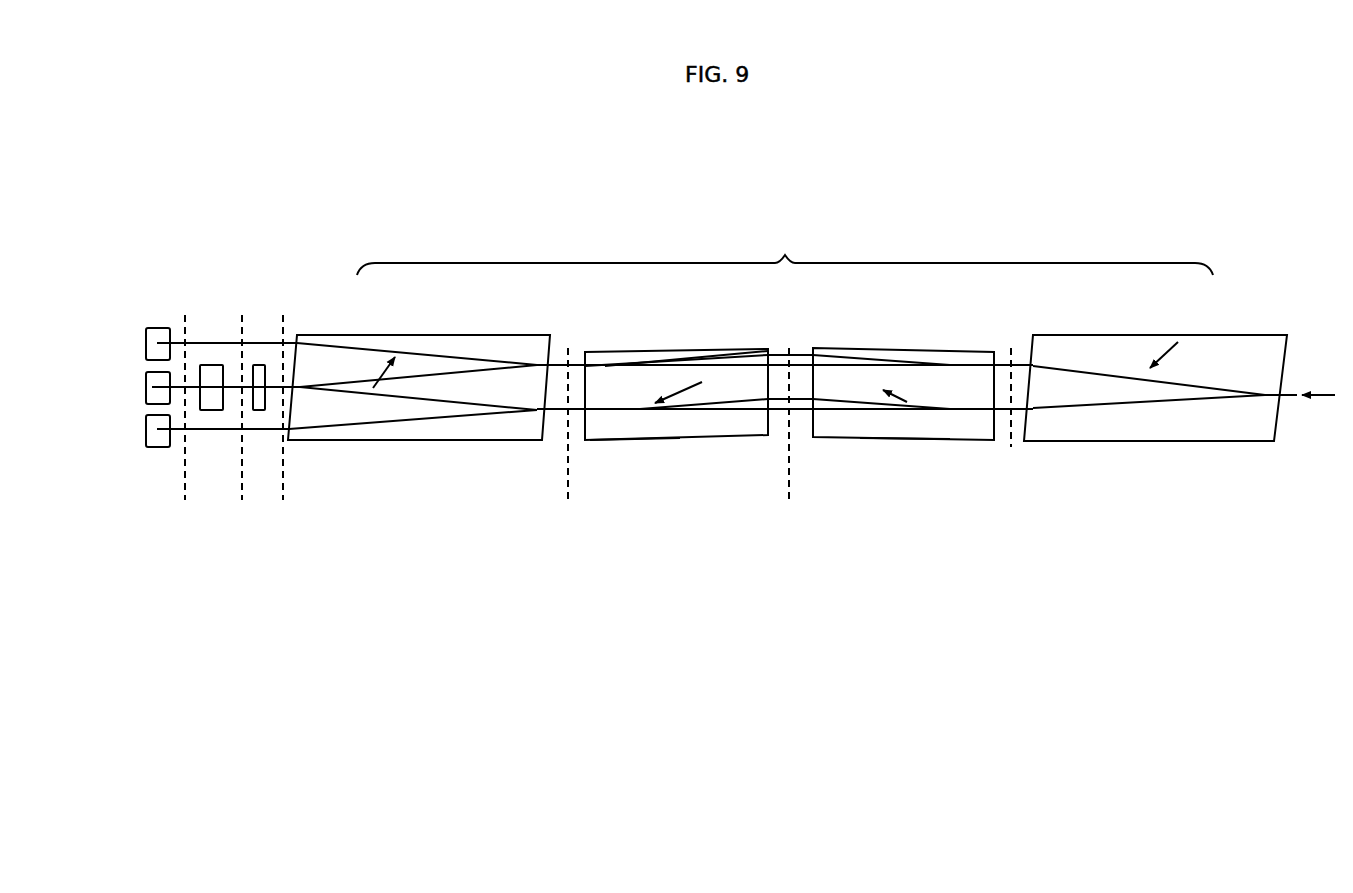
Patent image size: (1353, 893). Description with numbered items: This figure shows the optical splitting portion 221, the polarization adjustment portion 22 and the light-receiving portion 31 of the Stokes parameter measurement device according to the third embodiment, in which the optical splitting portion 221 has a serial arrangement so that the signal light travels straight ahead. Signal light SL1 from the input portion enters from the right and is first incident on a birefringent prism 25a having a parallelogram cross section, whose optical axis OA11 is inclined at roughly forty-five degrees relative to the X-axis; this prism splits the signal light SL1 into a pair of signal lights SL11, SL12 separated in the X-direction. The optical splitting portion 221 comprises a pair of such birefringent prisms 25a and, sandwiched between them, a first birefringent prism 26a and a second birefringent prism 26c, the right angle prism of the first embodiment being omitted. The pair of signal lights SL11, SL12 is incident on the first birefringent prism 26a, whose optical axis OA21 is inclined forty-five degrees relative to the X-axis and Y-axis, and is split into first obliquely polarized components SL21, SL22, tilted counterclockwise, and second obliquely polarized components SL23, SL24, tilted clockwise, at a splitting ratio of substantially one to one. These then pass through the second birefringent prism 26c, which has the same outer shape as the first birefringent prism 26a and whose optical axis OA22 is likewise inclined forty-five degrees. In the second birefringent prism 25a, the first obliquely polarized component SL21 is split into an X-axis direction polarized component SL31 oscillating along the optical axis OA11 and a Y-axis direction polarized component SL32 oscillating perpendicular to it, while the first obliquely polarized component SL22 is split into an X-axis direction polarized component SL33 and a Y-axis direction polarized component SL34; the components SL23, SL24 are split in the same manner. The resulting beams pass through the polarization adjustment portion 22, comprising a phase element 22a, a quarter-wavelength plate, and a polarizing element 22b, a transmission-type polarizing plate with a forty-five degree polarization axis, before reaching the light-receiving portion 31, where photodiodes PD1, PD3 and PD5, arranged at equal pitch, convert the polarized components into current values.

The first photodiode PD1 is at (147, 343).
The third photodiode PD3 is at (147, 383).
The fifth photodiode PD5 is at (155, 448).
The light-receiving portion 31 is at (170, 280).
The polarization adjustment portion 22 is at (253, 280).
The polarizing element 22b is at (213, 365).
The phase element 22a is at (262, 365).
The X-axis direction polarized component SL33 is at (330, 335).
The Y-axis direction polarized component SL34 is at (423, 373).
The Y-axis direction polarized component SL32 is at (438, 417).
The X-axis direction polarized component SL31 is at (480, 414).
The optical axis of the birefringent prism OA11 is at (373, 390).
The birefringent prism 25a is at (370, 440).
The optical splitting portion 221 is at (785, 251).
The first obliquely polarized component SL22 is at (783, 365).
The second obliquely polarized component SL23 is at (780, 403).
The second birefringent prism 26c is at (623, 440).
The optical axis of the second birefringent prism OA22 is at (678, 393).
The second obliquely polarized component SL24 is at (797, 362).
The first obliquely polarized component SL21 is at (800, 408).
The first birefringent prism 26a is at (900, 437).
The optical axis of the first birefringent prism OA21 is at (907, 403).
The signal light SL12 is at (1078, 370).
The signal light SL11 is at (1068, 410).
The signal light SL1 is at (1303, 411).